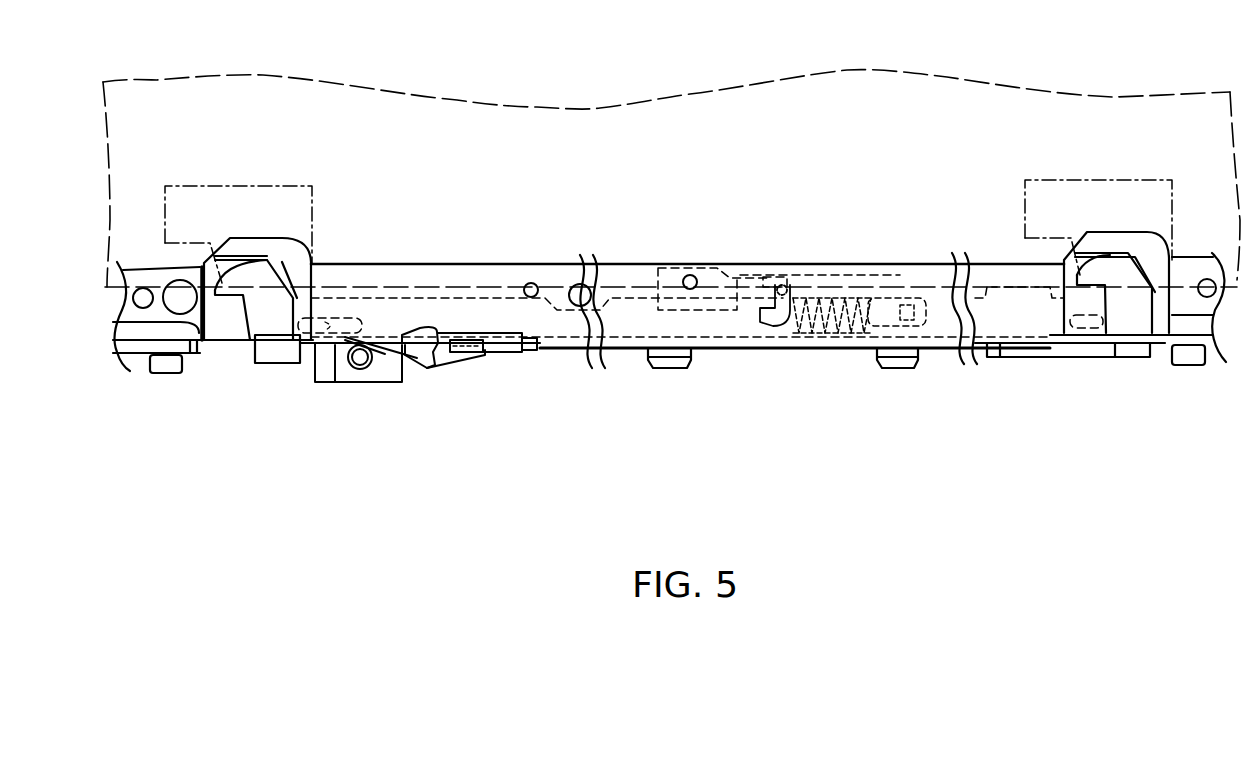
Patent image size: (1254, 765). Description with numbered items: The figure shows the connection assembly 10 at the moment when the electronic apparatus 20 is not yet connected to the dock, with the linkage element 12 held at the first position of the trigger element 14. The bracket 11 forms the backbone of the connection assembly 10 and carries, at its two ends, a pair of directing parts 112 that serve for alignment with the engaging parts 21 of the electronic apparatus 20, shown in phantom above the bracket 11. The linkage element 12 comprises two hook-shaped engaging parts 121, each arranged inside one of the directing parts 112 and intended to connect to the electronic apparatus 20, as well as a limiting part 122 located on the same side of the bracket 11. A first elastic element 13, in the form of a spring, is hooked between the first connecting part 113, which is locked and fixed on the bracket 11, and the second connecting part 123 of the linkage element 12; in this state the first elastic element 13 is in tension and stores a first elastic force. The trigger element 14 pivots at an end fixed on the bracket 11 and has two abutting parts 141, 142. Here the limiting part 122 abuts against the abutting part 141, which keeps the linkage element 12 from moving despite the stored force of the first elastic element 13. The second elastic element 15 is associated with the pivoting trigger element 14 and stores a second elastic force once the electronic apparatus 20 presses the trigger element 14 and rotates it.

The connection assembly 10 is at (283, 418).
The bracket 11 is at (800, 264).
The linkage element 12 is at (500, 298).
The first elastic element 13 is at (833, 333).
The trigger element 14 is at (417, 325).
The second elastic element 15 is at (370, 368).
The electronic apparatus 20 is at (905, 68).
The engaging part of the electronic apparatus 21 is at (176, 185).
The directing part 112 is at (283, 240).
The first connecting part 113 is at (773, 328).
The engaging part 121 is at (236, 287).
The limiting part 122 is at (507, 352).
The second connecting part 123 is at (914, 288).
The abutting part 141 is at (472, 358).
The abutting part 142 is at (430, 362).